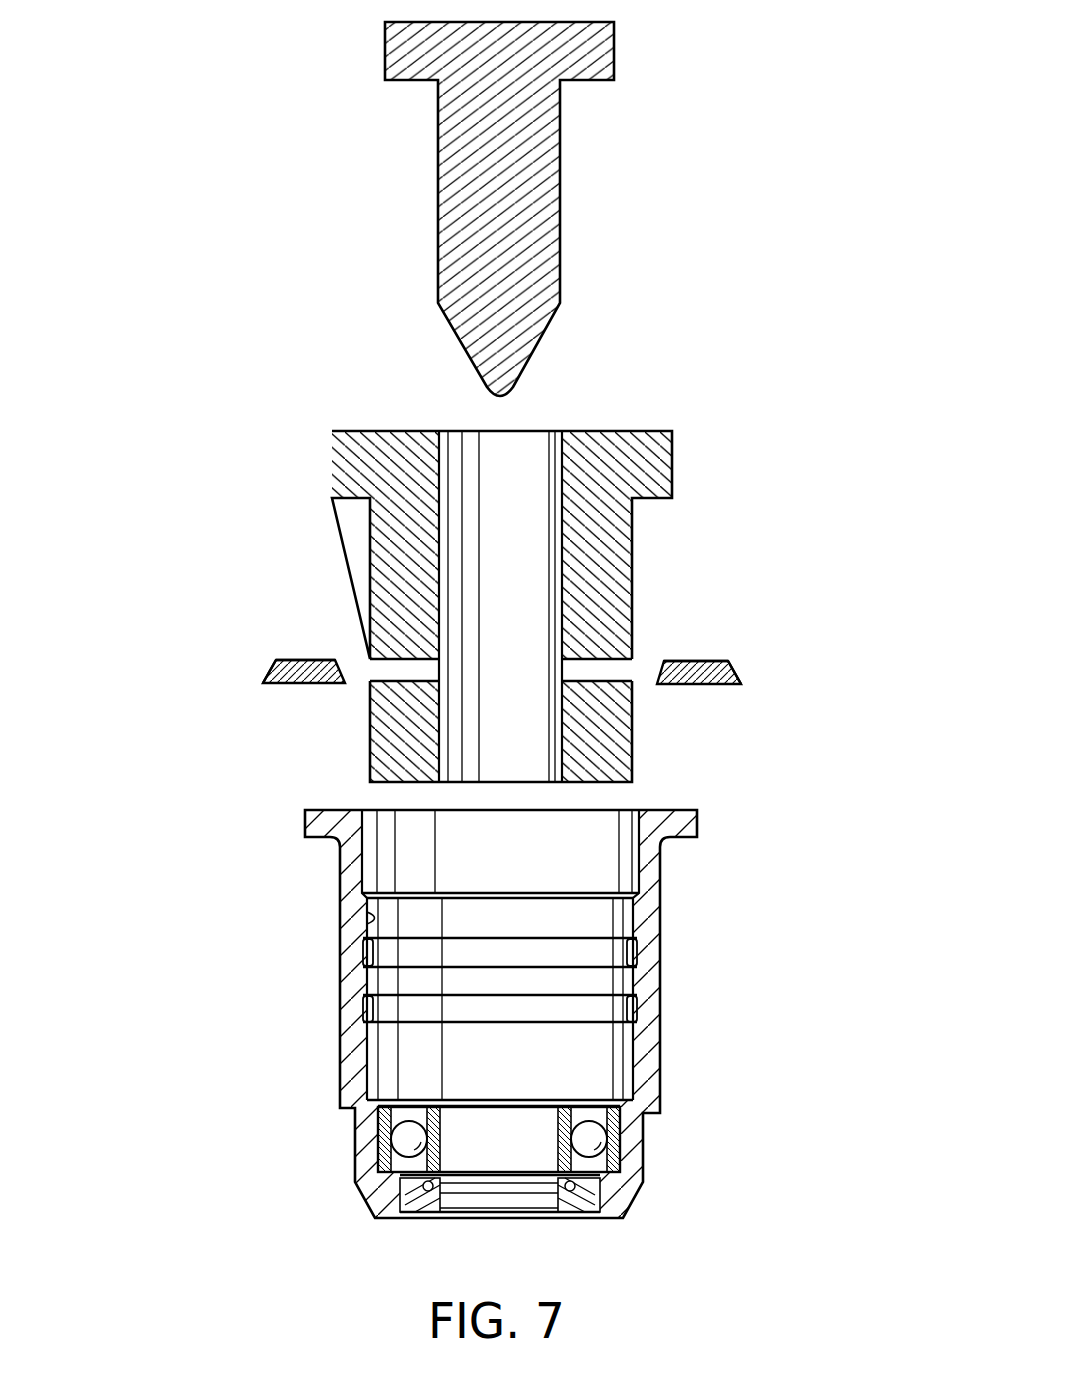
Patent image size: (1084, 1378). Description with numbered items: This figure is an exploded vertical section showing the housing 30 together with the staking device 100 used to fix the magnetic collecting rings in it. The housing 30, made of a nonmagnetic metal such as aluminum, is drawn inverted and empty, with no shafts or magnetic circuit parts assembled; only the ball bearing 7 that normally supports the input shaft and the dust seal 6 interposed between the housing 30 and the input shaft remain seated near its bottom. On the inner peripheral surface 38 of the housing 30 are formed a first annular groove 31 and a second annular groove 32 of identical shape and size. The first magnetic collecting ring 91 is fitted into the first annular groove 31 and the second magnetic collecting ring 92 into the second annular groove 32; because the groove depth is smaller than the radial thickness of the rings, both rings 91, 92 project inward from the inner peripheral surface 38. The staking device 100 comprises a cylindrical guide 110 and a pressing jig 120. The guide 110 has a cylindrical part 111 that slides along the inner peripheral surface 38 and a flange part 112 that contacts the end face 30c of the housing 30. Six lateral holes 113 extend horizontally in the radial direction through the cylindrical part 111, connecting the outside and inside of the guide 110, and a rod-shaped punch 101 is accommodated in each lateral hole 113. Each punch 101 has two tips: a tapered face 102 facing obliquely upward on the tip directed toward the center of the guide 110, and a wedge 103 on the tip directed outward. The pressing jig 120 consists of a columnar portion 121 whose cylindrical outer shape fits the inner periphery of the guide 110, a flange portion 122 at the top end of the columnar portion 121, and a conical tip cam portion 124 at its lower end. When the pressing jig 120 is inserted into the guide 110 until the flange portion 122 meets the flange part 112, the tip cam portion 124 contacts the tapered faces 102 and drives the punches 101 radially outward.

The pressing jig 120 is at (497, 209).
The columnar portion 121 is at (438, 185).
The flange portion 122 is at (384, 43).
The tip cam portion 124 is at (450, 329).
The staking device 100 is at (690, 426).
The guide 110 is at (509, 606).
The cylindrical part 111 is at (370, 530).
The flange part 112 is at (332, 452).
The lateral holes 113 is at (372, 677).
The punches 101 is at (508, 653).
The tapered face 102 is at (342, 660).
The wedge 103 is at (268, 675).
The housing 30 is at (520, 998).
The end face 30c is at (675, 810).
The inner peripheral surface 38 is at (368, 918).
The first annular groove 31 is at (360, 1005).
The second annular groove 32 is at (360, 950).
The first magnetic collecting ring 91 is at (636, 1010).
The second magnetic collecting ring 92 is at (636, 950).
The ball bearing 7 is at (383, 1138).
The dust seal 6 is at (418, 1205).